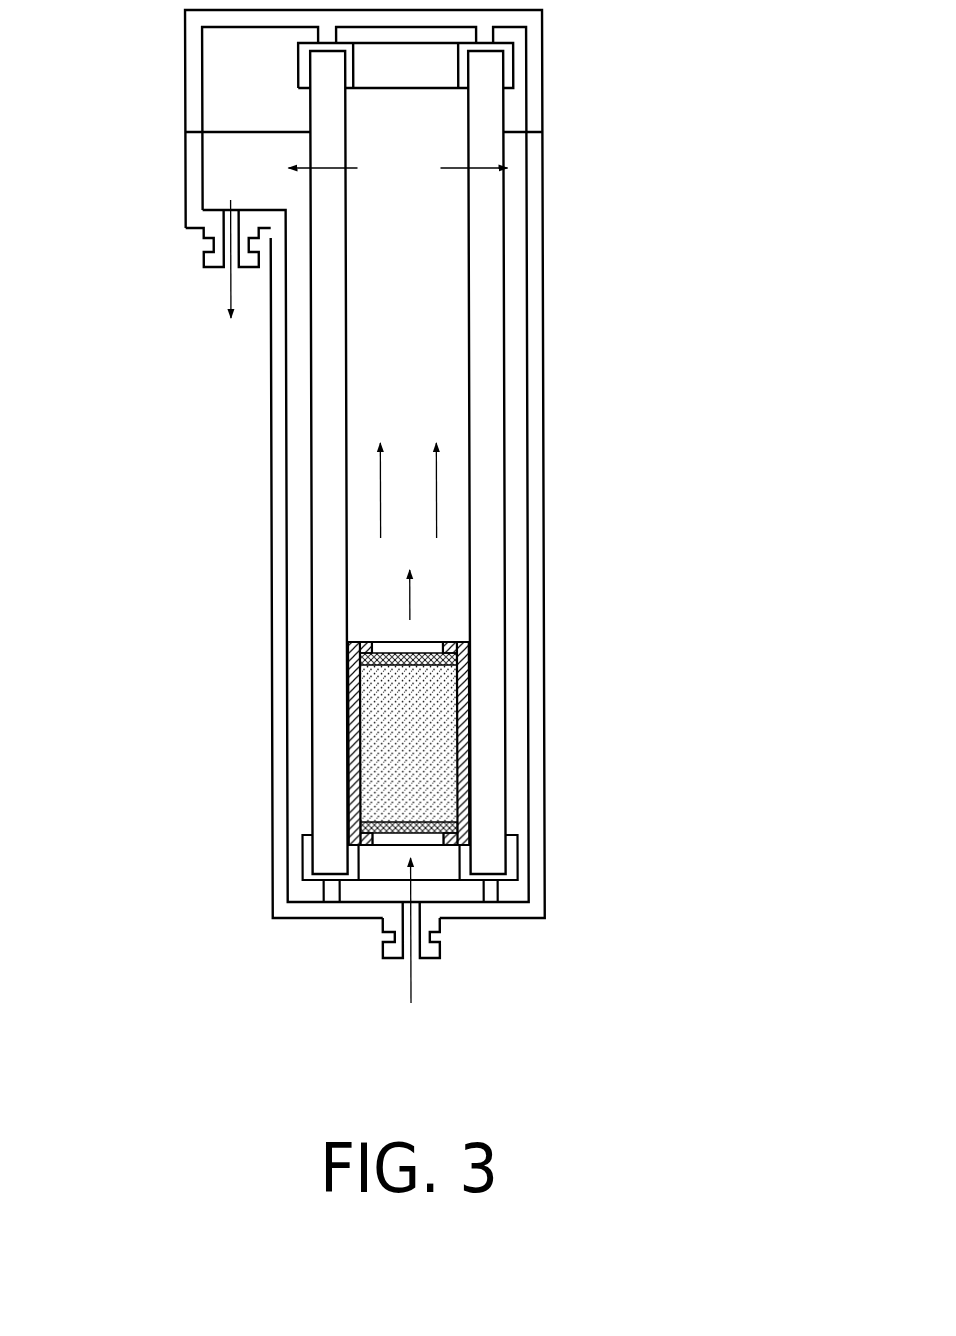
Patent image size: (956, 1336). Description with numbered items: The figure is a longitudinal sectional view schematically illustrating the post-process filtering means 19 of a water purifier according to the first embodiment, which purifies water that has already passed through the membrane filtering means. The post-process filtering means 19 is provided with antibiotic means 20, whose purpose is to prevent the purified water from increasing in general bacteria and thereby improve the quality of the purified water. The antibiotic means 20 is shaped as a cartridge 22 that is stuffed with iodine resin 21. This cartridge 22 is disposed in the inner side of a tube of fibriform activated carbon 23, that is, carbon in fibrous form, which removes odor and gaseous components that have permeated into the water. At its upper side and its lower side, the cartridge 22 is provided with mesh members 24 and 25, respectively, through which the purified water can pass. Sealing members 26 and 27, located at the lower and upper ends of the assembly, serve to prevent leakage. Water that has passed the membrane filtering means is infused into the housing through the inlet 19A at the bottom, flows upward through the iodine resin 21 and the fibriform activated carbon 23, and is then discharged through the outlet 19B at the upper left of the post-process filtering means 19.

The post-process filtering means 19 is at (535, 366).
The inlet 19A is at (407, 958).
The outlet 19B is at (225, 272).
The antibiotic means 20 is at (417, 824).
The iodine resin 21 is at (437, 733).
The cartridge 22 is at (470, 803).
The fibriform activated carbon 23 is at (310, 463).
The mesh member 24 is at (433, 648).
The mesh member 25 is at (428, 838).
The sealing member 26 is at (311, 871).
The sealing member 27 is at (503, 68).